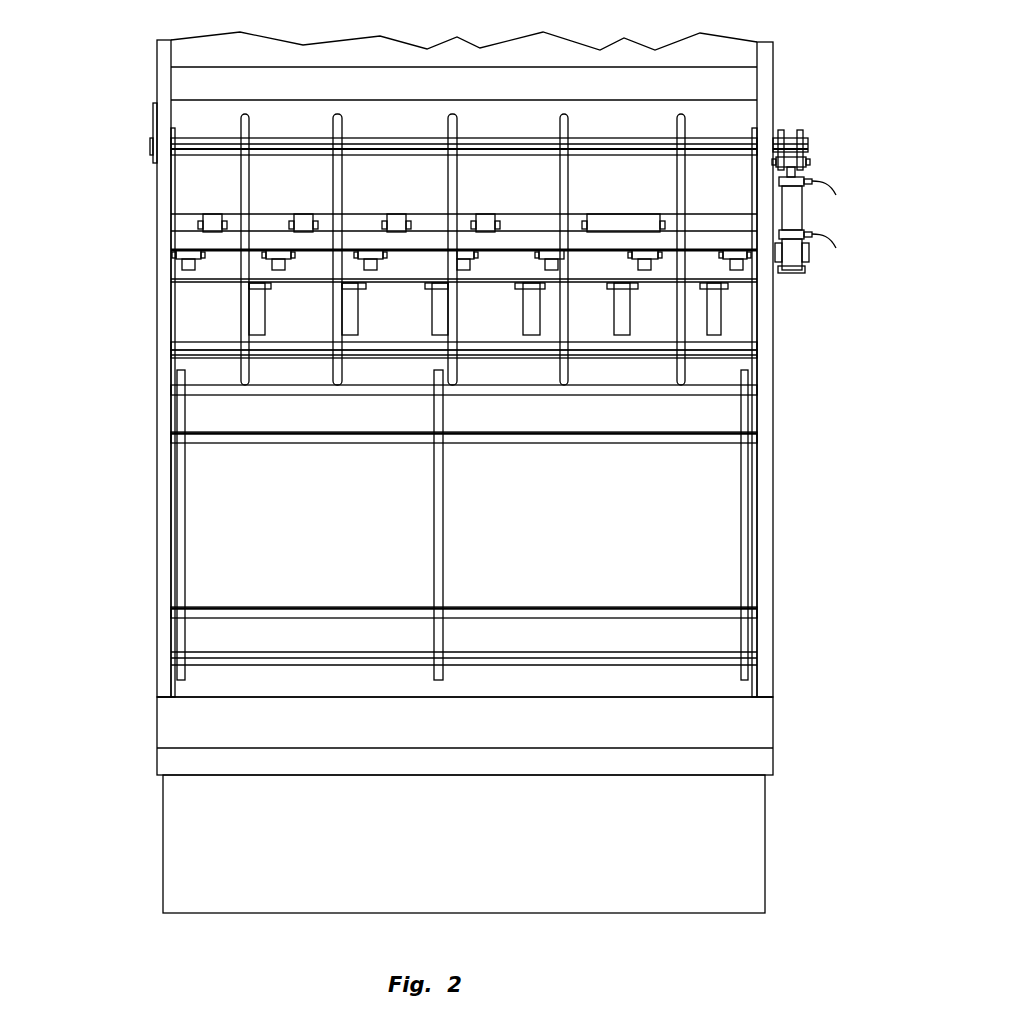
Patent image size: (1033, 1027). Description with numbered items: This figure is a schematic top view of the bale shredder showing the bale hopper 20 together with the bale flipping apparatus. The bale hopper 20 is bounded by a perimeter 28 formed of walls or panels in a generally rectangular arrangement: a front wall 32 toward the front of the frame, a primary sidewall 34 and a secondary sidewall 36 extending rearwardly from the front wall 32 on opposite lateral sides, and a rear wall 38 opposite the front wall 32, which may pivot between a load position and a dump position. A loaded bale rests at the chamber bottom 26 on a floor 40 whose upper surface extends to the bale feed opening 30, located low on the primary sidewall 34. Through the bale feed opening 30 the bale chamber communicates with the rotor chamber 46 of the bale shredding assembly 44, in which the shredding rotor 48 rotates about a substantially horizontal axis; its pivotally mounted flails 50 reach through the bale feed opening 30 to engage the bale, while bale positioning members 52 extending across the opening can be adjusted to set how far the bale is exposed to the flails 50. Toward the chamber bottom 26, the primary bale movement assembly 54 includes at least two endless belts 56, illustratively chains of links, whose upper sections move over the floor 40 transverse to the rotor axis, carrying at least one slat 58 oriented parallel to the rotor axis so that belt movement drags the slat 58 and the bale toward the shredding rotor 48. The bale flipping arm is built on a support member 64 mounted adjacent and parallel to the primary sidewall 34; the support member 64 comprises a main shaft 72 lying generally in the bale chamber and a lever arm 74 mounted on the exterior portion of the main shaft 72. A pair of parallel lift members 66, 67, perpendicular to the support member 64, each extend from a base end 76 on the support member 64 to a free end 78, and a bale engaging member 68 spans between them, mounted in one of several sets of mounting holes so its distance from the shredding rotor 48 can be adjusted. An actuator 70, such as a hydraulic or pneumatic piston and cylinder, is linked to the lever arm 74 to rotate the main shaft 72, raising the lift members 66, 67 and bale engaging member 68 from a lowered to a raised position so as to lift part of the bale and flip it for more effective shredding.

The bale hopper 20 is at (139, 457).
The chamber bottom 26 is at (712, 549).
The perimeter 28 is at (796, 626).
The bale feed opening 30 is at (626, 200).
The front wall 32 is at (165, 517).
The primary sidewall 34 is at (718, 45).
The secondary sidewall 36 is at (143, 690).
The rear wall 38 is at (760, 488).
The floor 40 is at (215, 407).
The bale shredding assembly 44 is at (137, 229).
The rotor chamber 46 is at (635, 885).
The shredding rotor 48 is at (193, 290).
The flails 50 is at (528, 312).
The bale positioning members 52 is at (338, 178).
The primary bale movement assembly 54 is at (692, 422).
The endless belts 56 is at (459, 571).
The slat 58 is at (376, 612).
The support member 64 is at (701, 147).
The lift member 66 is at (752, 287).
The lift member 67 is at (172, 262).
The bale engaging member 68 is at (388, 352).
The actuator 70 is at (795, 198).
The main shaft 72 is at (722, 143).
The lever arm 74 is at (808, 163).
The base end 76 is at (173, 170).
The free end 78 is at (173, 366).